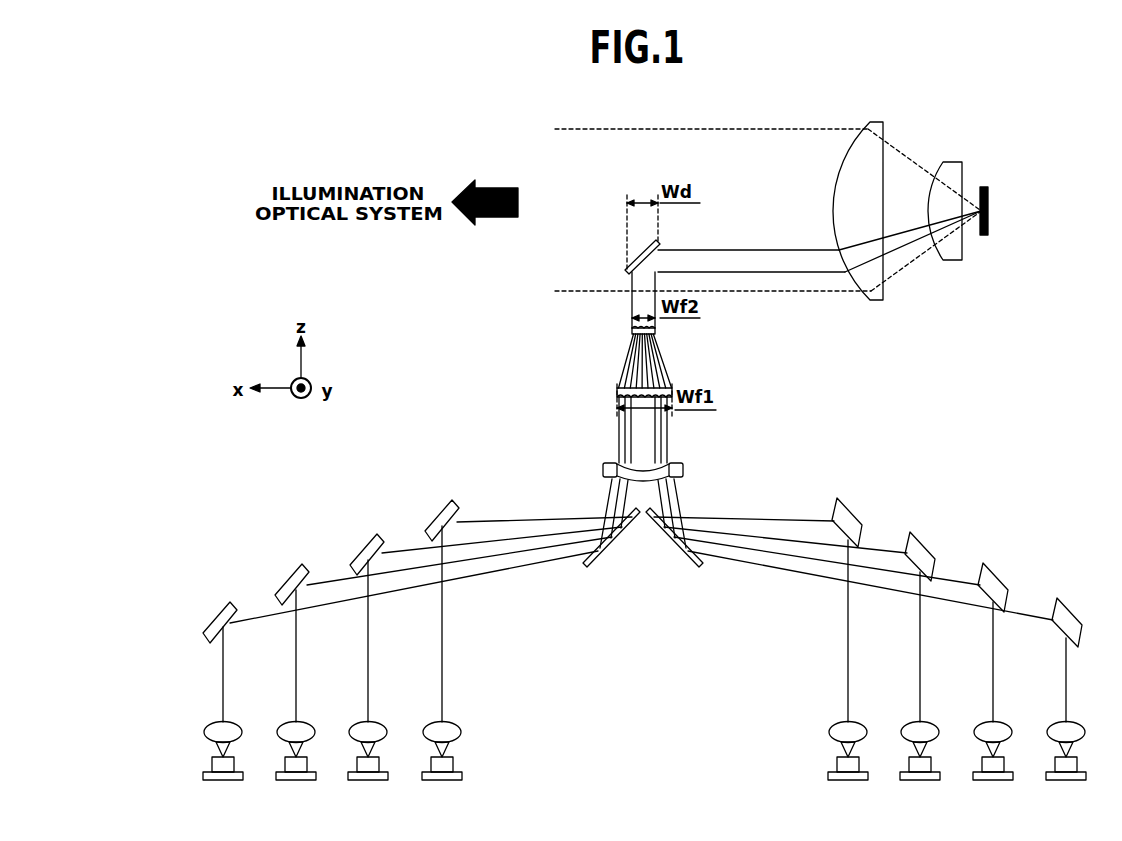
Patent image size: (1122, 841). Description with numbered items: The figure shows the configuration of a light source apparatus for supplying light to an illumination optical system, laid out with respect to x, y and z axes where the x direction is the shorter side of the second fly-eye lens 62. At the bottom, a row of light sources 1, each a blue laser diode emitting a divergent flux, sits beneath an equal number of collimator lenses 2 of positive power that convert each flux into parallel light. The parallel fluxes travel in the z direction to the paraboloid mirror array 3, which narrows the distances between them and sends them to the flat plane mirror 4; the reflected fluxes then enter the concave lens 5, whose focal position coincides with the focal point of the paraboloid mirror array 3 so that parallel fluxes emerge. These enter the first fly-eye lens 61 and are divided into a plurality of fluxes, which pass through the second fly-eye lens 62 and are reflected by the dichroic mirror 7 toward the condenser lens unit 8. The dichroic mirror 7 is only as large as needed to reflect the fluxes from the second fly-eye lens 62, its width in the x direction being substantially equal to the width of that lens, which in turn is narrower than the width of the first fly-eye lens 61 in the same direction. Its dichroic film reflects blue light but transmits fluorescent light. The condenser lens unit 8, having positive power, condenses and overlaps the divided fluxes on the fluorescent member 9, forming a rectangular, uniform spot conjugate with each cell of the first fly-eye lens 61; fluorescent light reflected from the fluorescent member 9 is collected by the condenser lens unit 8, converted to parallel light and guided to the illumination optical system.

The light source 1 is at (462, 773).
The collimator lens 2 is at (462, 728).
The paraboloid mirror array 3 is at (455, 486).
The flat plane mirror 4 is at (700, 563).
The concave lens 5 is at (684, 470).
The first fly-eye lens 61 is at (617, 391).
The second fly-eye lens 62 is at (632, 331).
The dichroic mirror 7 is at (627, 243).
The condenser lens unit 8 is at (833, 118).
The fluorescent member 9 is at (990, 213).